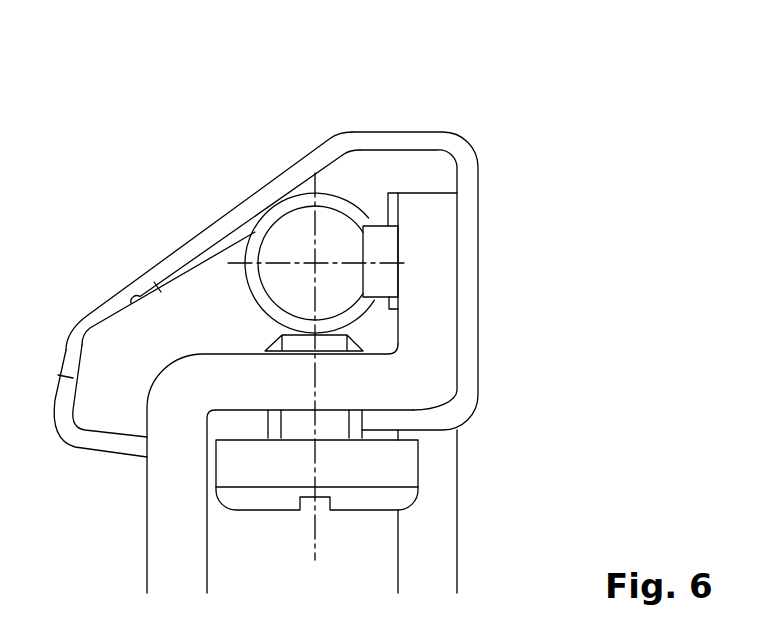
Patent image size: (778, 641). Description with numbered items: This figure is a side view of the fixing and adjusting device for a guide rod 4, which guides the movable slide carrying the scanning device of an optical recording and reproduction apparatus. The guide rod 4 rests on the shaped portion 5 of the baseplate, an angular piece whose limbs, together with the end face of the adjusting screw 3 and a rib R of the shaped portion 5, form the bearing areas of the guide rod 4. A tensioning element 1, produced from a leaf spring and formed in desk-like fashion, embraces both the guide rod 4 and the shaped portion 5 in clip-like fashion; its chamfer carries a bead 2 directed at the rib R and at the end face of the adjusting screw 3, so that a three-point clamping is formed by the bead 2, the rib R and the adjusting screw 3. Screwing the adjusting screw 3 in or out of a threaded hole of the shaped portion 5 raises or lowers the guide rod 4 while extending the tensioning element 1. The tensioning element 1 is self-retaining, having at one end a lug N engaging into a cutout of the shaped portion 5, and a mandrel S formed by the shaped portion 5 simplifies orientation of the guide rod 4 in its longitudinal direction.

The tensioning element 1 is at (268, 190).
The bead 2 is at (188, 273).
The adjusting screw 3 is at (387, 458).
The guide rod 4 is at (330, 302).
The shaped portion 5 is at (435, 248).
The mandrel S is at (385, 238).
The rib R is at (393, 205).
The lug N is at (102, 442).